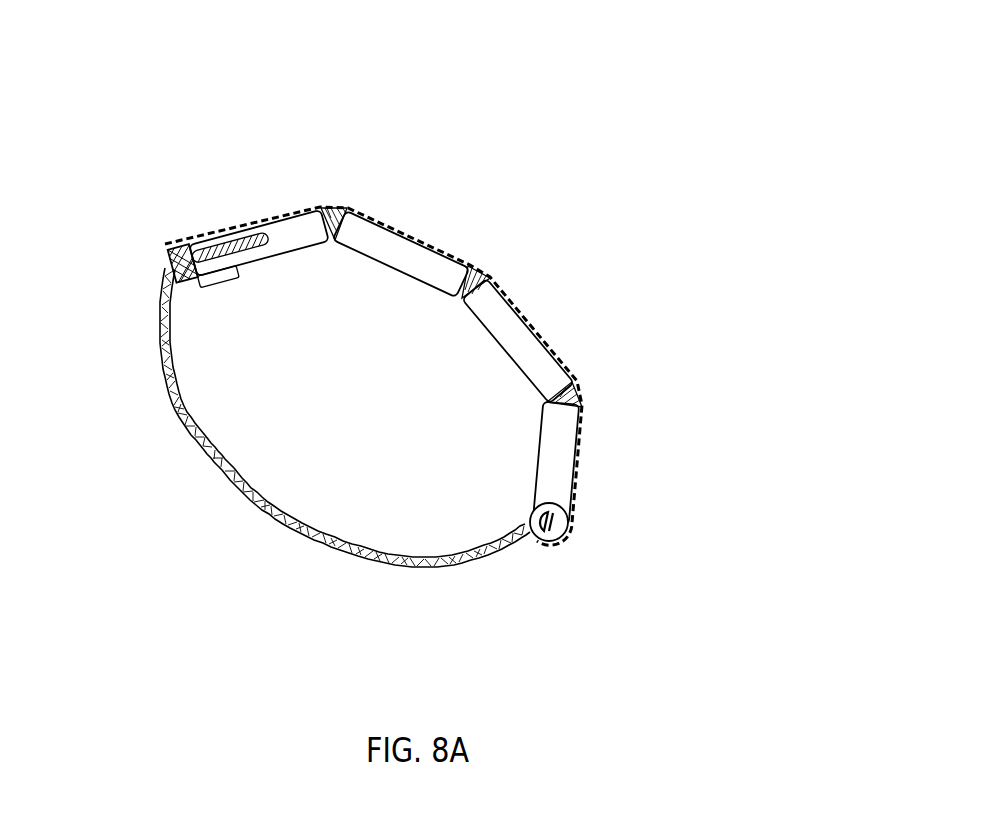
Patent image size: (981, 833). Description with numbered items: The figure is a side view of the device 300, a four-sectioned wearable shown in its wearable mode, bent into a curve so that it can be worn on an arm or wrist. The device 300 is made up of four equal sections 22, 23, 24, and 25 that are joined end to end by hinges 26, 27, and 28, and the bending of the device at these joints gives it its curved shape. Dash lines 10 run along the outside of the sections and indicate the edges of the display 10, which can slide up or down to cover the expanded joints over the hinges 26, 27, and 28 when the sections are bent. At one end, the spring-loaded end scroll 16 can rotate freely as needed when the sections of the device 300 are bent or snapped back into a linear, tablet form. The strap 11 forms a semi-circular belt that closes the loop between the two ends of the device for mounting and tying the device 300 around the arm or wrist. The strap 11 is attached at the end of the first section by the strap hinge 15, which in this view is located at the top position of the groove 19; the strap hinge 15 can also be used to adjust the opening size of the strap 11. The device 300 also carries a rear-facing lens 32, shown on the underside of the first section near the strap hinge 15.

The device 300 is at (513, 98).
The display 10 is at (538, 295).
The strap 11 is at (228, 482).
The strap hinge 15 is at (170, 263).
The spring-loaded end scroll 16 is at (568, 522).
The groove 19 is at (221, 246).
The first section 22 is at (290, 262).
The second section 23 is at (384, 270).
The third section 24 is at (490, 330).
The fourth section 25 is at (540, 462).
The hinge 26 is at (338, 208).
The hinge 27 is at (480, 270).
The hinge 28 is at (586, 396).
The rear-facing lens 32 is at (221, 284).